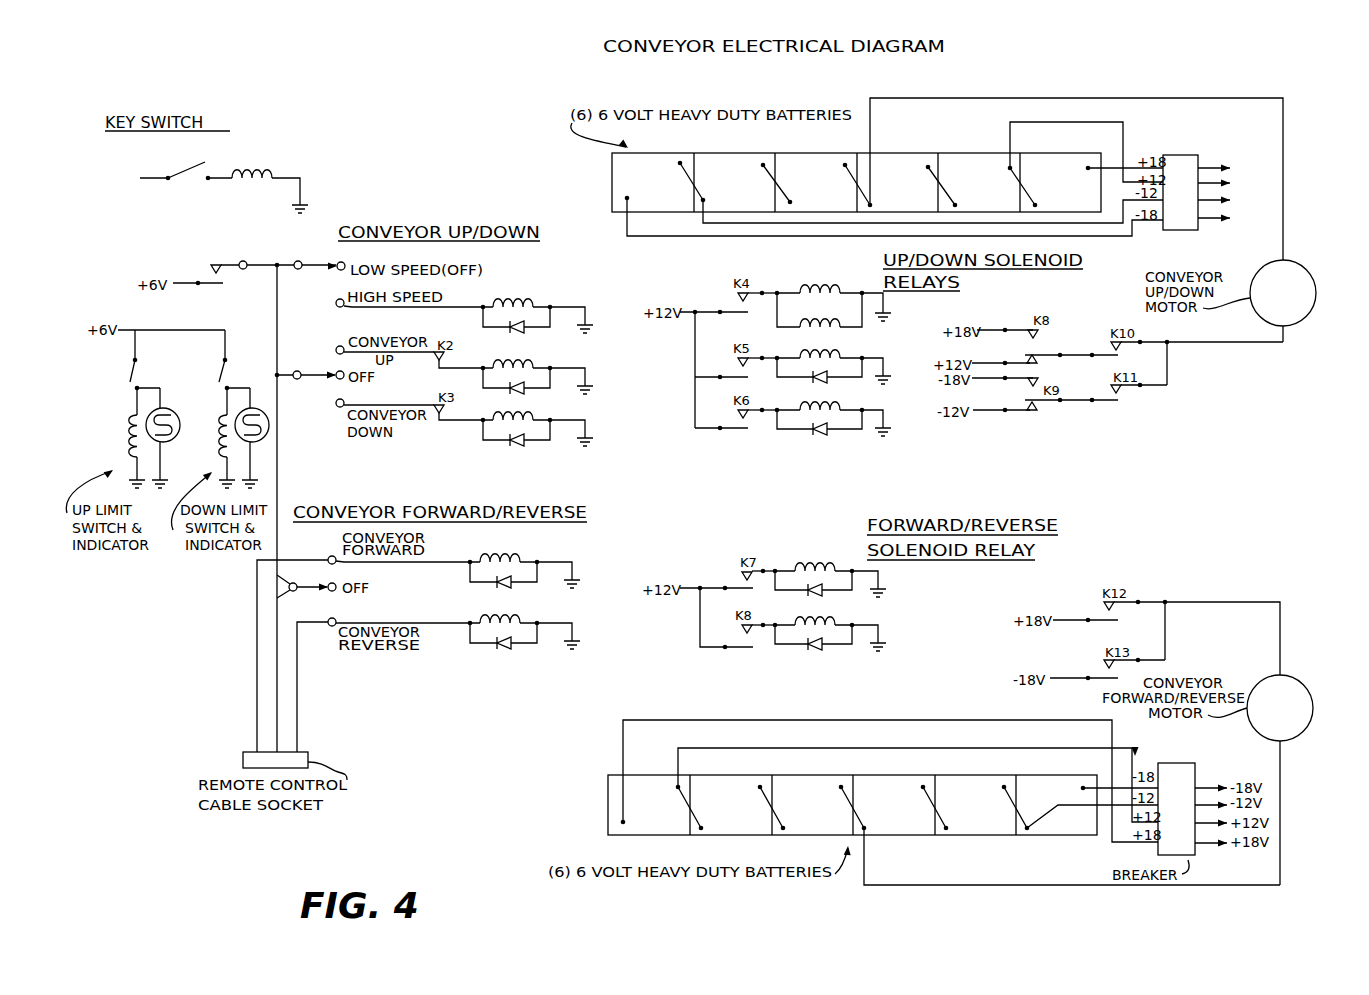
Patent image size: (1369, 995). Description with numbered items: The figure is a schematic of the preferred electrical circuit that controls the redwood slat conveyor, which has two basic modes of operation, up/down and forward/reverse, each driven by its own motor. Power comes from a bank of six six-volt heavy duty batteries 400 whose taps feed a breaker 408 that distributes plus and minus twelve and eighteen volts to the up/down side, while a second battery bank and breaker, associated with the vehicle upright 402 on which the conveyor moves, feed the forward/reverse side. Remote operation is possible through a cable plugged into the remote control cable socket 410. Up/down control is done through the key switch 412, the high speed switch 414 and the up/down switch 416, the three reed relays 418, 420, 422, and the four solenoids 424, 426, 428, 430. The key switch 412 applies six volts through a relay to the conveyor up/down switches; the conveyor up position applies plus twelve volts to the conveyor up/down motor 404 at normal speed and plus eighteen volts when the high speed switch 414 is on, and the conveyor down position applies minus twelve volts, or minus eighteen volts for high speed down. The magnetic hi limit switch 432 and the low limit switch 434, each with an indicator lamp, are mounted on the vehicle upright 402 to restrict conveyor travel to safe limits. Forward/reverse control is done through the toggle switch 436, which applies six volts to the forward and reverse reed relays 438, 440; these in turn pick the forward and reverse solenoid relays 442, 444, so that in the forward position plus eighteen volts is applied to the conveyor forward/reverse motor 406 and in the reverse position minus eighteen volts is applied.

The battery bank 400 is at (612, 175).
The vehicle upright 402 is at (607, 808).
The conveyor up/down motor 404 is at (1304, 327).
The conveyor forward/reverse motor 406 is at (1309, 688).
The breaker 408 is at (1198, 155).
The socket 410 is at (243, 762).
The key switch S1 412 is at (244, 143).
The high speed switch S2 414 is at (334, 246).
The switch S3 416 is at (290, 364).
The reed relay K4 418 is at (538, 301).
The reed relay K5 420 is at (538, 363).
The reed relay K6 422 is at (538, 415).
The solenoid K8 424 is at (843, 293).
The solenoid K9 426 is at (800, 327).
The solenoid K10 428 is at (851, 344).
The solenoid K11 430 is at (851, 394).
The magnetic hi limit switch S5 432 is at (127, 381).
The low limit switch S6 434 is at (216, 381).
The toggle switch S4 436 is at (305, 549).
The reed relay K7 438 is at (537, 557).
The reed relay K8 440 is at (537, 618).
The solenoid relay K12 442 is at (797, 570).
The solenoid relay K13 444 is at (835, 625).